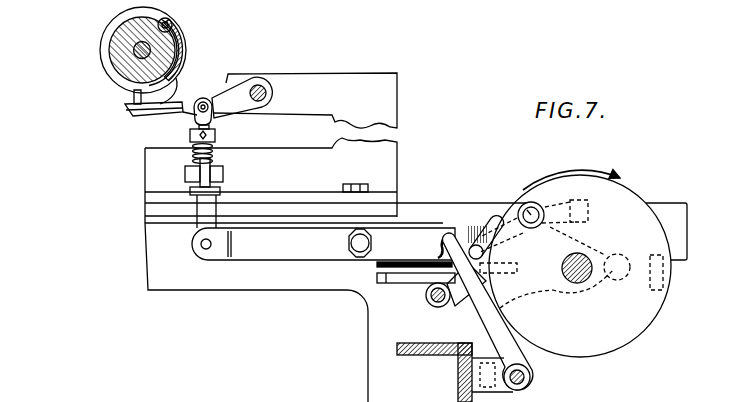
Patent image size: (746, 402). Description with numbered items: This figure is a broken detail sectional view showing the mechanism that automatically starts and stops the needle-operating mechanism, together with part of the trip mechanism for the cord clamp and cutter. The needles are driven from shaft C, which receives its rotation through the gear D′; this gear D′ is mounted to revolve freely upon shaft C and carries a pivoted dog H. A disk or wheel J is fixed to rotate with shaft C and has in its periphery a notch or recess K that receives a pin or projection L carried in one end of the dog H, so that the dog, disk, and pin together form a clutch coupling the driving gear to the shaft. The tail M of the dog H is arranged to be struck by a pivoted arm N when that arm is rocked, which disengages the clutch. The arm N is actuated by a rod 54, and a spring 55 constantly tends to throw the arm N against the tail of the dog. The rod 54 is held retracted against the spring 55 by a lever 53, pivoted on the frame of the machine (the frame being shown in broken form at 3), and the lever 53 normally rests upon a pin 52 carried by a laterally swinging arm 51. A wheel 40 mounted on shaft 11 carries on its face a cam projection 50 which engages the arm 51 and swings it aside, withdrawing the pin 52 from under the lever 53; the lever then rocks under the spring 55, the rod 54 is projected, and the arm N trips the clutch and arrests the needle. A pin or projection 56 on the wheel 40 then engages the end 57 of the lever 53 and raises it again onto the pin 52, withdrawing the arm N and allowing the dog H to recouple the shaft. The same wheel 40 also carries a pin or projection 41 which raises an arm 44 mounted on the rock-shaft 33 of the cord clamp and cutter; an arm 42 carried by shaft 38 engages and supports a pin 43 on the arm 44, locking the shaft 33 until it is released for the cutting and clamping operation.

The gear D′ is at (103, 32).
The disk or wheel J is at (110, 44).
The shaft C is at (137, 55).
The pin or projection L is at (171, 23).
The dog H is at (178, 52).
The notch or recess K is at (185, 75).
The tail M is at (125, 108).
The arm N is at (143, 100).
The rod 54 is at (215, 129).
The spring 55 is at (192, 160).
The frame 3 is at (397, 148).
The lever 53 is at (323, 256).
The laterally-swinging arm 51 is at (432, 268).
The pin 52 is at (447, 237).
The shaft 33 is at (428, 297).
The arm 42 is at (503, 322).
The pin 43 is at (498, 258).
The arm 44 is at (492, 230).
The shaft 38 is at (531, 376).
The wheel 40 is at (633, 333).
The shaft 11 is at (595, 243).
The pin or projection 41 is at (528, 207).
The end 57 is at (588, 214).
The pin or projection 56 is at (626, 259).
The cam projection 50 is at (664, 275).